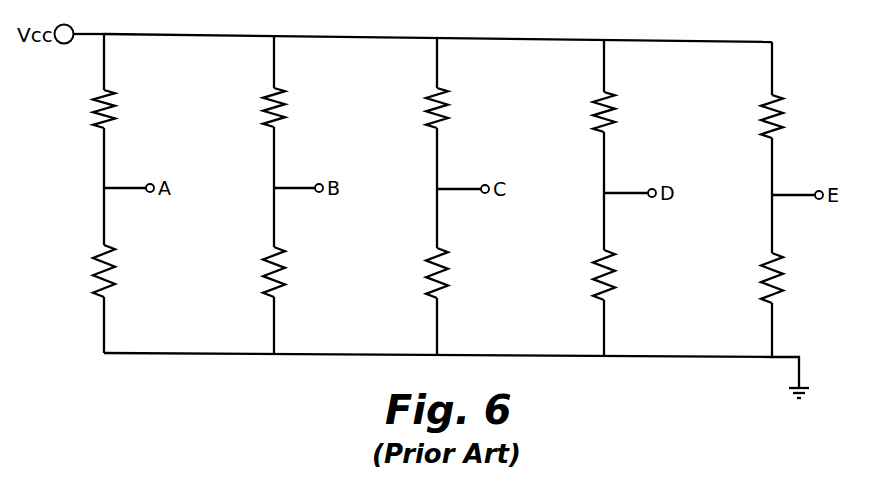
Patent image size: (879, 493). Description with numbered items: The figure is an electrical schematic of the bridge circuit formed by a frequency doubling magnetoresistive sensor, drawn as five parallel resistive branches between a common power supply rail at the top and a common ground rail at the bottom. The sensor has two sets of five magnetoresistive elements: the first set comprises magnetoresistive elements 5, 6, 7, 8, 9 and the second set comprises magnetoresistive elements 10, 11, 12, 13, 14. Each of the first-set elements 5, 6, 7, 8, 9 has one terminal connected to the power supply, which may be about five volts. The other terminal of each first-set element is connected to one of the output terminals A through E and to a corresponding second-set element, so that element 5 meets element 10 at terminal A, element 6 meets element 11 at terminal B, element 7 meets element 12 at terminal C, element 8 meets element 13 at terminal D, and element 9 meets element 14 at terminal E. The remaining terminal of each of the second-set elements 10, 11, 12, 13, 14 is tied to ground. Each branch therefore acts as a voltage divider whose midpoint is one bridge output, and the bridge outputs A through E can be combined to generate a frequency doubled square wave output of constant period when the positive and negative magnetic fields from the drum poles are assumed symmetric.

The magnetoresistive element 5 is at (113, 109).
The magnetoresistive element 6 is at (283, 107).
The magnetoresistive element 7 is at (446, 108).
The magnetoresistive element 8 is at (613, 112).
The magnetoresistive element 9 is at (781, 116).
The magnetoresistive element 10 is at (119, 271).
The magnetoresistive element 11 is at (289, 272).
The magnetoresistive element 12 is at (452, 273).
The magnetoresistive element 13 is at (619, 275).
The magnetoresistive element 14 is at (787, 278).